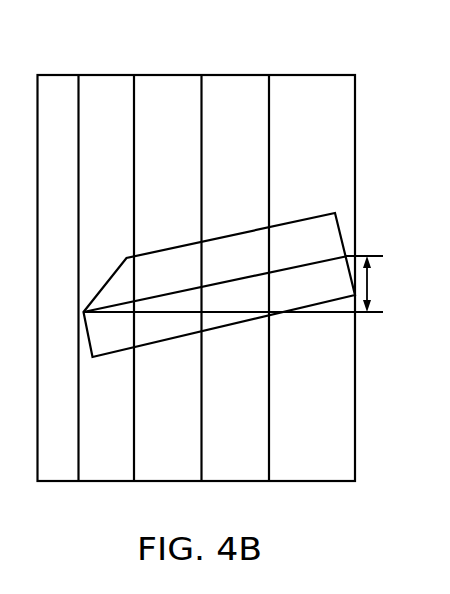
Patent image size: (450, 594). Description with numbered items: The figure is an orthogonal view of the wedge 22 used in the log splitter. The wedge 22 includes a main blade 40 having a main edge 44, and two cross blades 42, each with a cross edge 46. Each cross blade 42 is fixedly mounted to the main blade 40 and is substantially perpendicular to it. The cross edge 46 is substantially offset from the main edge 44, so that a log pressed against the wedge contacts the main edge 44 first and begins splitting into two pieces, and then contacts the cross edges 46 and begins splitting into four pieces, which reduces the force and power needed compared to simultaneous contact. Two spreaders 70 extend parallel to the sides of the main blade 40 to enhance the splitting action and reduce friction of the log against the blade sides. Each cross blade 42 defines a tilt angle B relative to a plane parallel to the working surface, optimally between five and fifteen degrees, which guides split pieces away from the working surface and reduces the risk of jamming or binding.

The wedge 22 is at (273, 53).
The main blade 40 is at (90, 74).
The cross blade 42 is at (298, 233).
The main edge 44 is at (37, 92).
The cross edge 46 is at (82, 335).
The spreader 70 is at (171, 100).
The tilt angle B is at (370, 277).